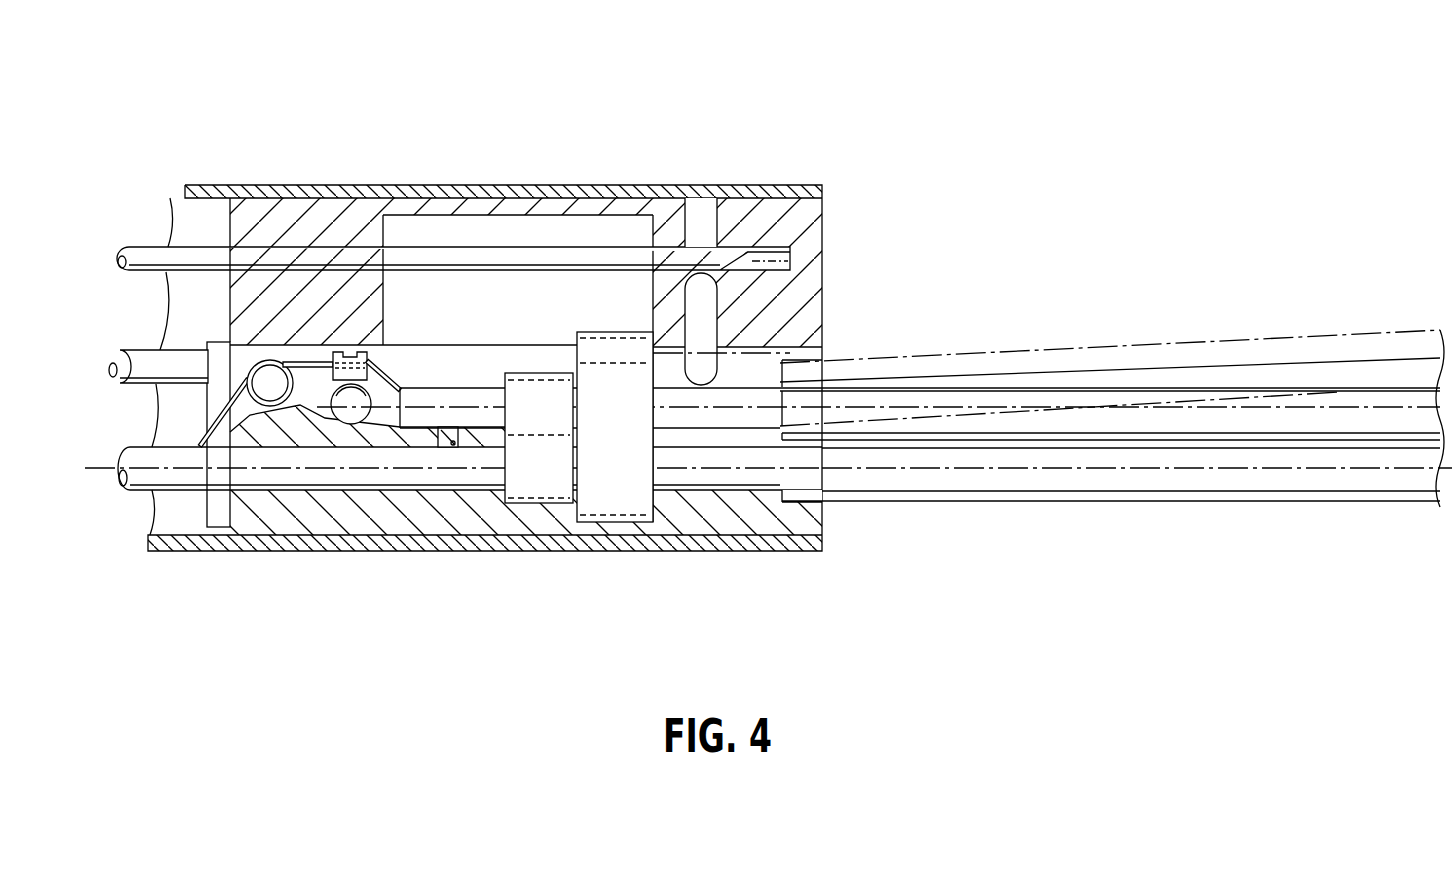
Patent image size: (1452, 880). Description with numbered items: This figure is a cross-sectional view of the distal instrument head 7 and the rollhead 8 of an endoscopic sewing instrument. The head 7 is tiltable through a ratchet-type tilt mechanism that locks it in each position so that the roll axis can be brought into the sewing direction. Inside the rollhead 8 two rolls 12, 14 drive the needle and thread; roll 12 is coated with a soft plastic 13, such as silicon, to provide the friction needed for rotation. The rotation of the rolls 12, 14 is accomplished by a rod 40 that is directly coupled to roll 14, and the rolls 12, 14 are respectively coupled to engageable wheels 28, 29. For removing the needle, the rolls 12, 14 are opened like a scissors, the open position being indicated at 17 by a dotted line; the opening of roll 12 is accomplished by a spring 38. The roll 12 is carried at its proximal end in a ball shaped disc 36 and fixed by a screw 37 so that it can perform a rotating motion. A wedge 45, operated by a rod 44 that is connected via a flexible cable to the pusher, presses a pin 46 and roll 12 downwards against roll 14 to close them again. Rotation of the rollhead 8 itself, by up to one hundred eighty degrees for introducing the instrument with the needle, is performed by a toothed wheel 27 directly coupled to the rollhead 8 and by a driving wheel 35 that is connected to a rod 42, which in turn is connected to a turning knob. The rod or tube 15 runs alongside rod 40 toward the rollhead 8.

The distal instrument head 7 is at (520, 113).
The rollhead 8 is at (797, 522).
The roll 12 is at (1175, 397).
The soft plastic coating 13 is at (1265, 385).
The roll 14 is at (1090, 483).
The outer tube 15 is at (1020, 497).
The open position 17 is at (1045, 367).
The toothed wheel 27 is at (613, 500).
The engageable wheel 28 is at (523, 483).
The engageable wheel 29 is at (537, 413).
The driving wheel 35 is at (605, 348).
The ball shaped disc 36 is at (357, 413).
The screw 37 is at (343, 350).
The spring 38 is at (248, 394).
The rod 40 is at (183, 477).
The rod 42 is at (186, 361).
The rod 44 is at (148, 251).
The wedge 45 is at (752, 250).
The pin 46 is at (705, 290).